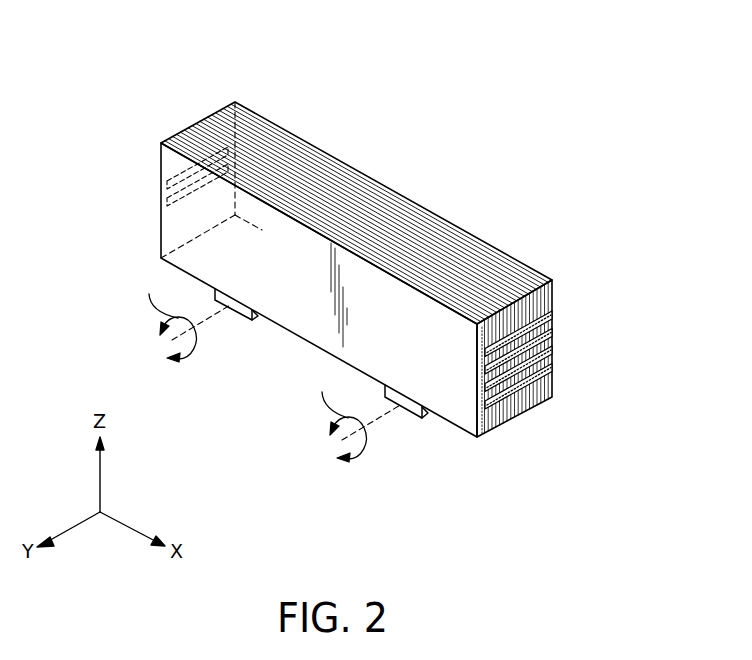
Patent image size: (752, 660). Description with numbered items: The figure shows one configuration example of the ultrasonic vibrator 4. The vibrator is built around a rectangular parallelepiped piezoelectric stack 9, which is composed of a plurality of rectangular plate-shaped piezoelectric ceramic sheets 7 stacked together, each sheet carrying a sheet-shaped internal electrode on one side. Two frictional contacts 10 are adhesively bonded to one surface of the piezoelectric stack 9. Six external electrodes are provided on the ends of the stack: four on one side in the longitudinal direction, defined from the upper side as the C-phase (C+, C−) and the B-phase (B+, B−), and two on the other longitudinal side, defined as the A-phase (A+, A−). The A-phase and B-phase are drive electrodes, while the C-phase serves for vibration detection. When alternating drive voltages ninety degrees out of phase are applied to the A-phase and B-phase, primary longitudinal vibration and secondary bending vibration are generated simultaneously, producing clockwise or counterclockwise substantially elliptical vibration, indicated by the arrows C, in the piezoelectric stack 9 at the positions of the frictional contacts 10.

The ultrasonic vibrator 4 is at (483, 174).
The piezoelectric ceramic sheet 7 is at (506, 254).
The piezoelectric stack 9 is at (261, 107).
The frictional contact 10 is at (238, 314).